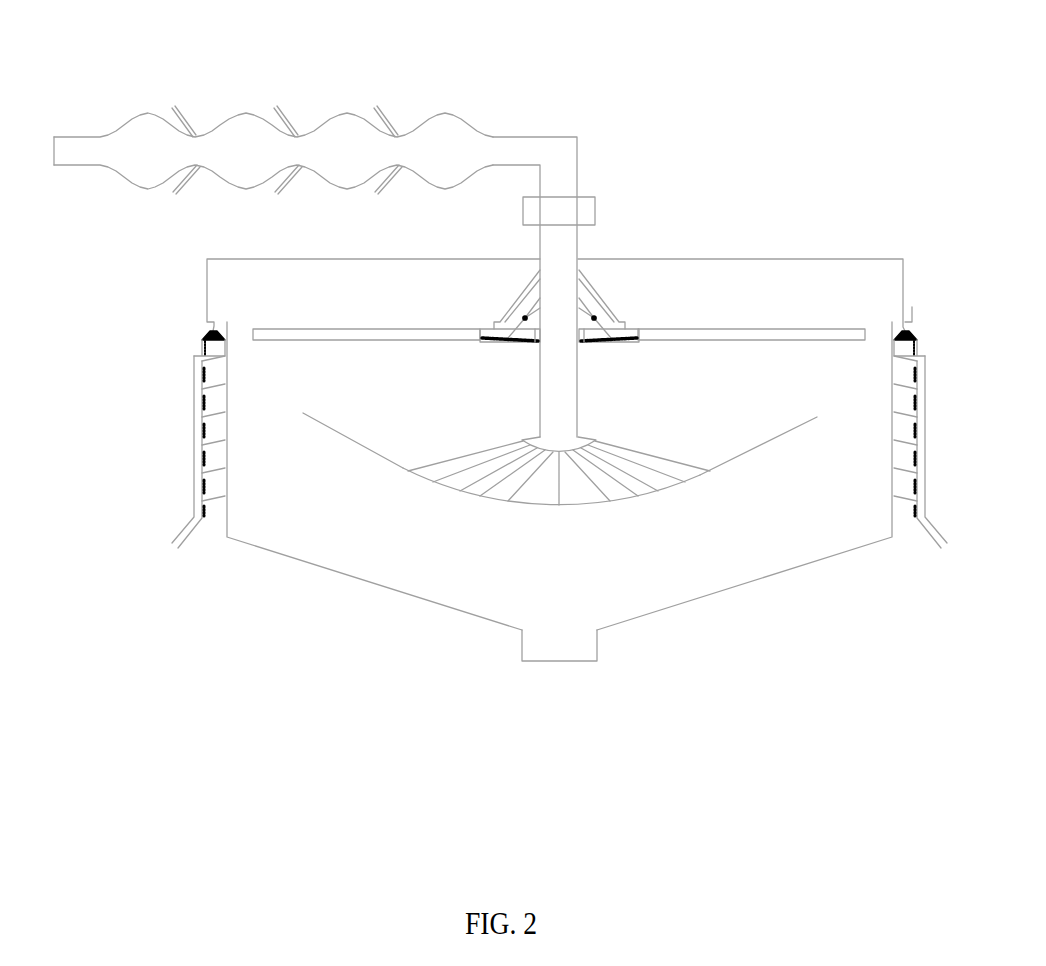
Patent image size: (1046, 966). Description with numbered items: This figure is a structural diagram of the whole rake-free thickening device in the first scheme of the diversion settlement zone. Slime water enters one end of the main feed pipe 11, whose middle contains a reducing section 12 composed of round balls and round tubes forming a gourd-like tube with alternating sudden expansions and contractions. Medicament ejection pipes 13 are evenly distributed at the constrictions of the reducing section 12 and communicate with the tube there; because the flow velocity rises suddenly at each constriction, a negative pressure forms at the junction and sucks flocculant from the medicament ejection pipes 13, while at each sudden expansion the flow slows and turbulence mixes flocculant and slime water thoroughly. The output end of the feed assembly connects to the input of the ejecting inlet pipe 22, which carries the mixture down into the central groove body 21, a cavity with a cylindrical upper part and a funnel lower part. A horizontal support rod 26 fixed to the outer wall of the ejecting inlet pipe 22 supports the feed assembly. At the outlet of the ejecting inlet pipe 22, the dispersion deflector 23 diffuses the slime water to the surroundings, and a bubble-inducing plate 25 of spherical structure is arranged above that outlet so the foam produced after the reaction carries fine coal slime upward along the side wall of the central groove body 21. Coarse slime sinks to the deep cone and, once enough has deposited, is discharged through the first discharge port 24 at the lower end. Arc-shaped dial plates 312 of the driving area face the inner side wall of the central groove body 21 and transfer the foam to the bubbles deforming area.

The main feed pipe 11 is at (523, 152).
The reducing section 12 is at (449, 114).
The medicament ejection pipe 13 is at (186, 122).
The central groove body 21 is at (765, 577).
The ejecting inlet pipe 22 is at (540, 377).
The dispersion deflector 23 is at (645, 467).
The first discharge port 24 is at (570, 640).
The bubble-inducing plate 25 is at (770, 440).
The horizontal support rod 26 is at (593, 198).
The arc-shaped dial plate 312 is at (347, 340).